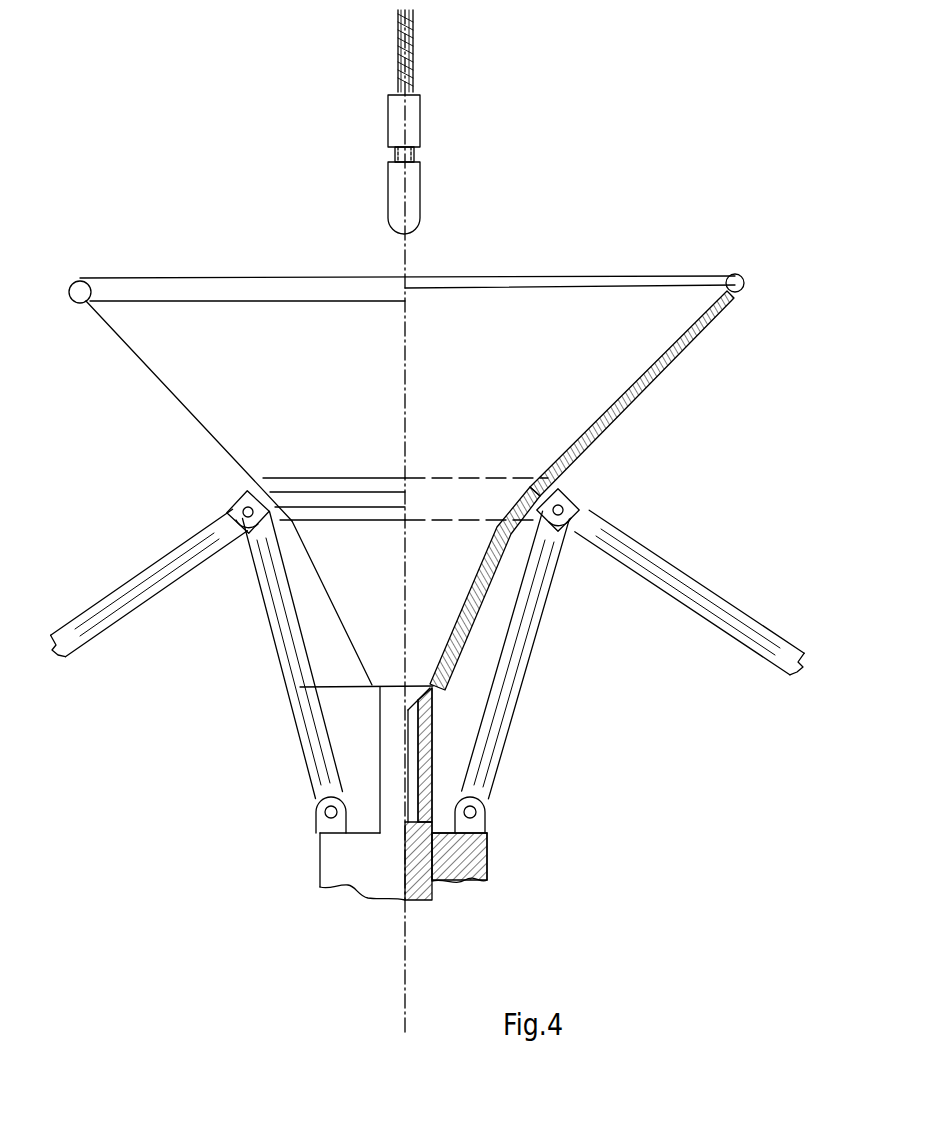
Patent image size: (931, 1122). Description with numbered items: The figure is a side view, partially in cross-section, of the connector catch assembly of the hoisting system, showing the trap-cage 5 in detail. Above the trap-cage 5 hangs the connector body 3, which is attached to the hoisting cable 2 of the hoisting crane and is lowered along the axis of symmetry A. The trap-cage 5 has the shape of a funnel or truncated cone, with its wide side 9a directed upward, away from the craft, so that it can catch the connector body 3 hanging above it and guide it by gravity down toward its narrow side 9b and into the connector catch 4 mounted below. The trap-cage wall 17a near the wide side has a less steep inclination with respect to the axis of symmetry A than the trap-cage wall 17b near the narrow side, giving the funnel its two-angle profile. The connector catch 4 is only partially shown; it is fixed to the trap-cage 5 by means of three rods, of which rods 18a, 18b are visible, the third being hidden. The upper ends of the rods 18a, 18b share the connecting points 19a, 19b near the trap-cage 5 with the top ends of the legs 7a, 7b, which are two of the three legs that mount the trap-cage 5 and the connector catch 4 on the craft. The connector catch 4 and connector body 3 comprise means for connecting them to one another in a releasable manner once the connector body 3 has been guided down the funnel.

The hoisting cable 2 is at (412, 60).
The connector body 3 is at (412, 122).
The connector catch 4 is at (305, 858).
The trap-cage 5 is at (226, 256).
The leg 7a is at (160, 558).
The leg 7b is at (690, 580).
The wide side 9a is at (513, 278).
The narrow side 9b is at (362, 683).
The trap-cage wall 17a is at (152, 363).
The trap-cage wall 17b is at (347, 595).
The rod 18a is at (307, 740).
The rod 18b is at (487, 757).
The connecting point 19a is at (247, 498).
The connecting point 19b is at (567, 495).
The axis of symmetry A is at (405, 997).